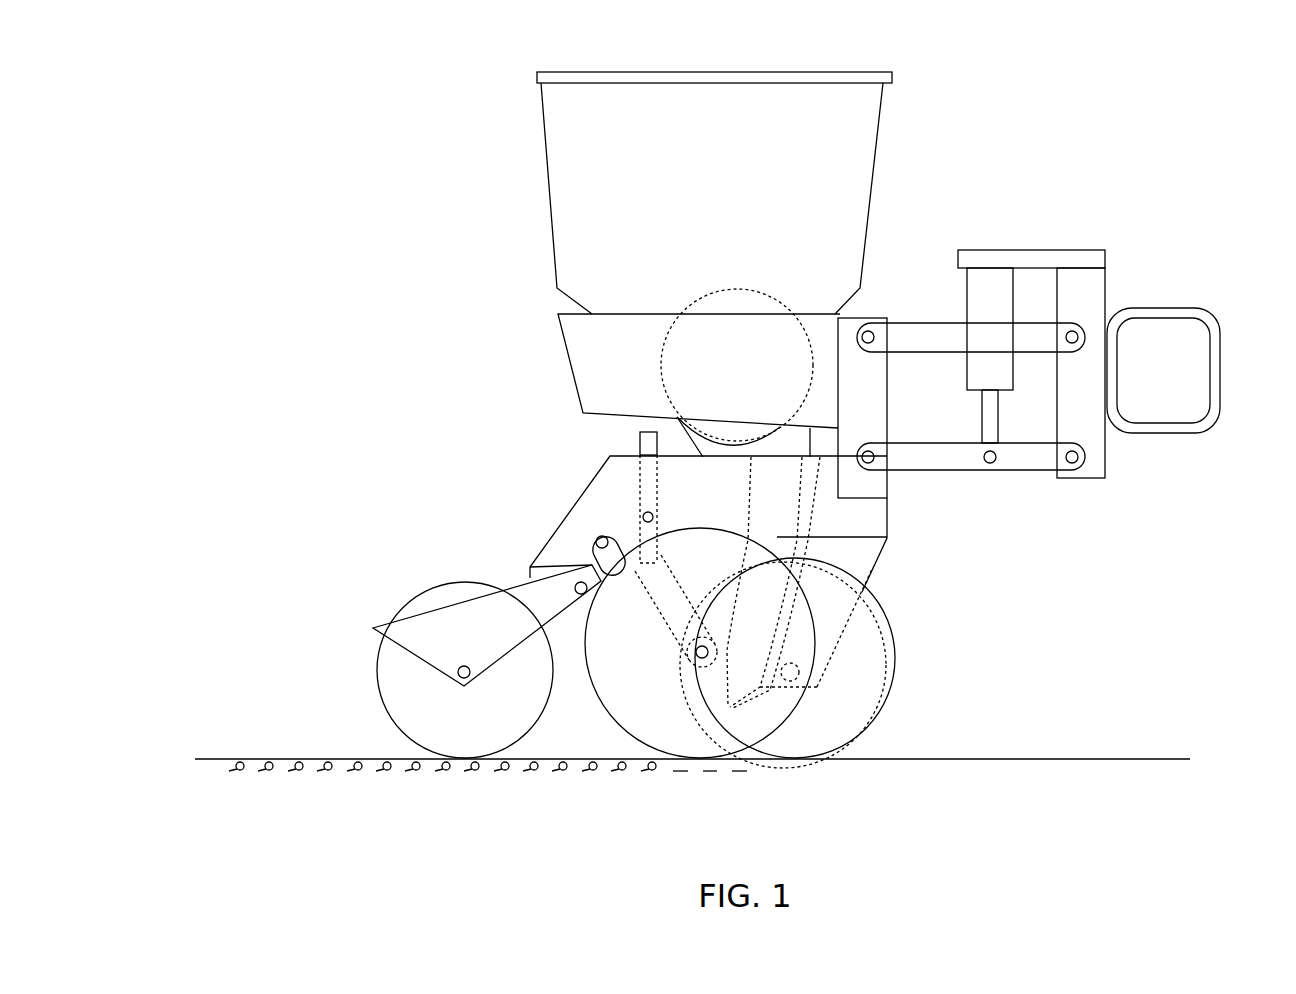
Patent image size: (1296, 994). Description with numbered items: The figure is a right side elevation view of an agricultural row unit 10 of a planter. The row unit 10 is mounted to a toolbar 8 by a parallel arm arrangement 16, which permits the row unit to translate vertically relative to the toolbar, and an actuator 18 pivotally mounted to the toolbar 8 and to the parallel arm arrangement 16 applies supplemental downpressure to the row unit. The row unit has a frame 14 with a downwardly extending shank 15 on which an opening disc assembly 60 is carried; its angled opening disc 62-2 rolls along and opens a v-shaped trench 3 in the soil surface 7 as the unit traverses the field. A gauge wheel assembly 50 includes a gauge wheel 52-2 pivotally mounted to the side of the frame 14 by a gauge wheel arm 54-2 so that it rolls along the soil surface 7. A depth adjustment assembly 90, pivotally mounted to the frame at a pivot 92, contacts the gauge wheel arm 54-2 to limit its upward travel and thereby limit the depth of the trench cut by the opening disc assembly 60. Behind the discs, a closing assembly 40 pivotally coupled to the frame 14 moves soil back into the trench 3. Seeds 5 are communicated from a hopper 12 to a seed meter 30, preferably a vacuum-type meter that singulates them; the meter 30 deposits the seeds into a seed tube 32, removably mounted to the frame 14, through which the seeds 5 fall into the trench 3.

The row unit 10 is at (990, 153).
The hopper 12 is at (700, 195).
The seed meter 30 is at (652, 391).
The frame 14 is at (583, 490).
The depth adjustment assembly 90 is at (636, 495).
The pivot 92 is at (651, 512).
The seed tube 32 is at (800, 538).
The gauge wheel arm 54-2 is at (590, 547).
The closing assembly 40 is at (368, 594).
The gauge wheel assembly 50 is at (625, 738).
The gauge wheel 52-2 is at (618, 682).
The opening disc assembly 60 is at (897, 658).
The opening disc 62-2 is at (830, 715).
The shank 15 is at (873, 567).
The parallel arm arrangement 16 is at (1033, 473).
The actuator 18 is at (975, 305).
The toolbar 8 is at (1180, 307).
The soil surface 7 is at (1075, 757).
The seeds 5 is at (610, 775).
The trench 3 is at (697, 778).